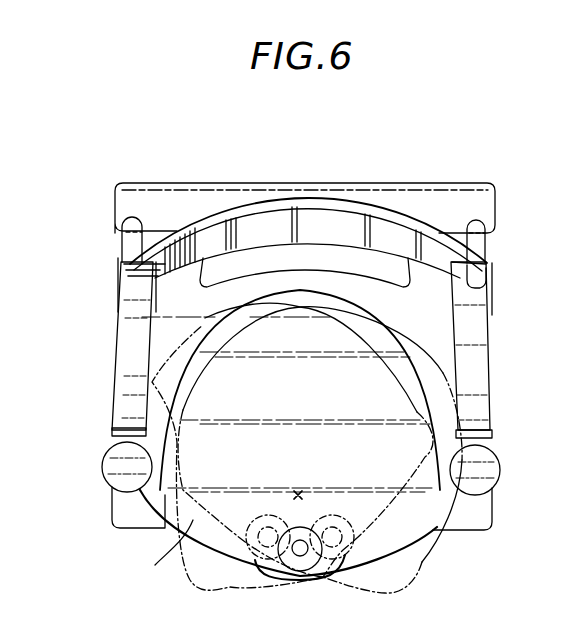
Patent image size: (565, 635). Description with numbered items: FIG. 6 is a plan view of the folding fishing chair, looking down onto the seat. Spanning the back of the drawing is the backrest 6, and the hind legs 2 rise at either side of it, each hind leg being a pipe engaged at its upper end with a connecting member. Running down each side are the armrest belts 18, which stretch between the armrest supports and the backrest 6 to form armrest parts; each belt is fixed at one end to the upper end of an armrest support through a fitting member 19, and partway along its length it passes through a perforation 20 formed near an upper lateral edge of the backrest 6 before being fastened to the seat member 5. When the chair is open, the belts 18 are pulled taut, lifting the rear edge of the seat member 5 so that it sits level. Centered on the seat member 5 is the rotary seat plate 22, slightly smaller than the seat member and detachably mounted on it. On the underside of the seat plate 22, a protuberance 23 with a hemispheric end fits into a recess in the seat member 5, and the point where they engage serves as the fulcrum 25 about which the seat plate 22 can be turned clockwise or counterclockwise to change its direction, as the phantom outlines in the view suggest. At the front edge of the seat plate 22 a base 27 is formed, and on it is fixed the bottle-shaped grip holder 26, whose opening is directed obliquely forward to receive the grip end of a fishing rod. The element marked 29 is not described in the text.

The top cross bar 29 is at (175, 198).
The backrest 6 is at (318, 219).
The hind leg 2 is at (133, 242).
The perforation 20 is at (484, 286).
The armrest belt 18 is at (137, 350).
The fitting member 19 is at (107, 463).
The seat member 5 is at (128, 518).
The rotary seat plate 22 is at (175, 585).
The fulcrum 25 is at (298, 489).
The protuberance 23 is at (298, 495).
The grip holder 26 is at (268, 548).
The base 27 is at (320, 580).